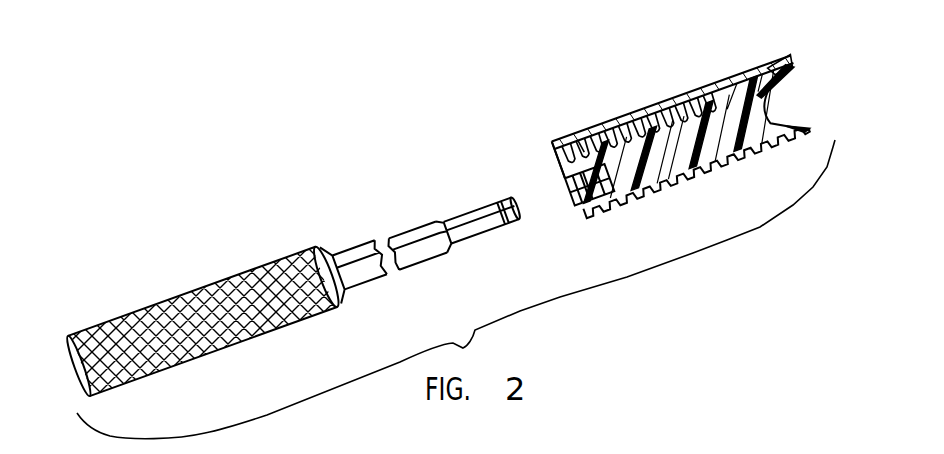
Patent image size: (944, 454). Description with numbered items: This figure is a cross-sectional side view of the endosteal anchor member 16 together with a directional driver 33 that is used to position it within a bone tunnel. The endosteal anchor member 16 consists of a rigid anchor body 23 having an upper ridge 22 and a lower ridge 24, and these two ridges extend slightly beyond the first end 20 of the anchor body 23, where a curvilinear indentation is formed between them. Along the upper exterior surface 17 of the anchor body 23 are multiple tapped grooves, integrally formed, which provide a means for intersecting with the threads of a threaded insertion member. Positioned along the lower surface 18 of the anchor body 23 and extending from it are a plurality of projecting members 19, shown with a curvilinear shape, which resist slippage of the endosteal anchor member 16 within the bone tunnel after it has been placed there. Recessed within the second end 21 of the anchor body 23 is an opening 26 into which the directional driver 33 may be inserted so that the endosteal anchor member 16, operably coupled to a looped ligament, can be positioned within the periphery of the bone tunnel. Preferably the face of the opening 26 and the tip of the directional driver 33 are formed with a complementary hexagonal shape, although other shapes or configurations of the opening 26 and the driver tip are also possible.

The directional driver 33 is at (272, 236).
The endosteal anchor member 16 is at (708, 72).
The upper exterior surface 17 is at (607, 117).
The lower surface 18 is at (753, 158).
The projecting members 19 is at (670, 187).
The first end 20 is at (768, 120).
The second end 21 is at (560, 172).
The upper ridge 22 is at (788, 58).
The anchor body 23 is at (667, 142).
The lower ridge 24 is at (801, 122).
The opening 26 is at (568, 193).